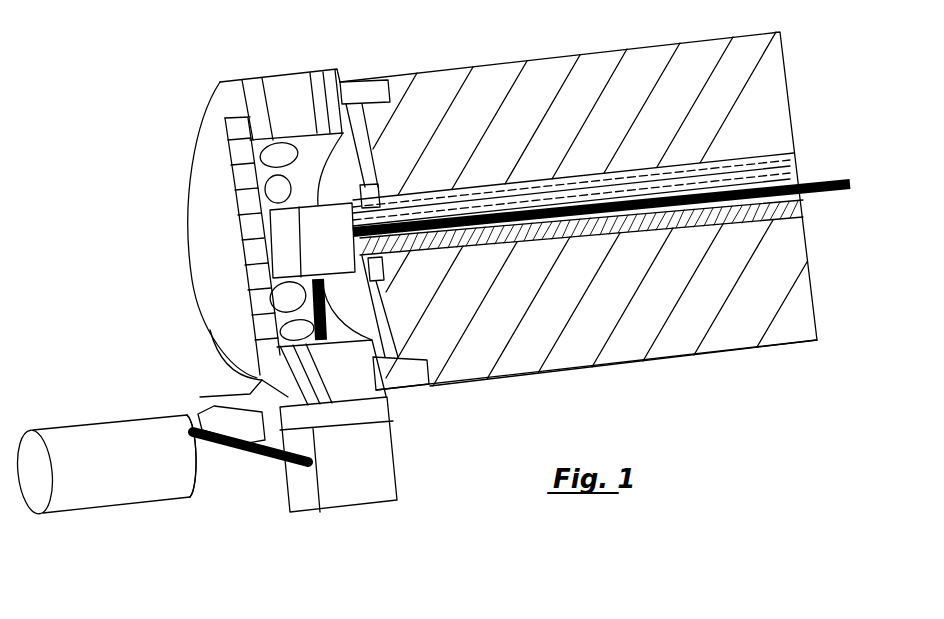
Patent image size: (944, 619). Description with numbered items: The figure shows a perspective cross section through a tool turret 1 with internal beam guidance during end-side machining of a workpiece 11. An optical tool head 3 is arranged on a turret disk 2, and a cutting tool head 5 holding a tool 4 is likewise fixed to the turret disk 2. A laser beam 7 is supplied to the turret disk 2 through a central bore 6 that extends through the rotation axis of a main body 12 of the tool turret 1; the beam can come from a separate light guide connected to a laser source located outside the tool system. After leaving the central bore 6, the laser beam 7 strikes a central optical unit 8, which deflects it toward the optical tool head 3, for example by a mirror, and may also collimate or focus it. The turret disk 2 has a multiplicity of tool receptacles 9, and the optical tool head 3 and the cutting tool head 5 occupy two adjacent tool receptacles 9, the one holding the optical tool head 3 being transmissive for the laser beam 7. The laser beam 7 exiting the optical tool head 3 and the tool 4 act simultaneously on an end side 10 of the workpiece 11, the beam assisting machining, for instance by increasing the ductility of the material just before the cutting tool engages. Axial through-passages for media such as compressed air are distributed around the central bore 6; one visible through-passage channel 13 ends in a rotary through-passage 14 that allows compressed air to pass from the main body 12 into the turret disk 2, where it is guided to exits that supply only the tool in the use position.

The tool turret 1 is at (140, 102).
The turret disk 2 is at (228, 93).
The optical tool head 3 is at (383, 483).
The tool 4 is at (213, 408).
The cutting tool head 5 is at (242, 395).
The central bore 6 is at (783, 173).
The laser beam 7 is at (829, 189).
The central optical unit 8 is at (307, 232).
The tool receptacles 9 is at (285, 97).
The end side 10 is at (204, 472).
The workpiece 11 is at (88, 495).
The main body 12 is at (777, 323).
The through-passage channel 13 is at (737, 167).
The rotary through-passage 14 is at (360, 197).